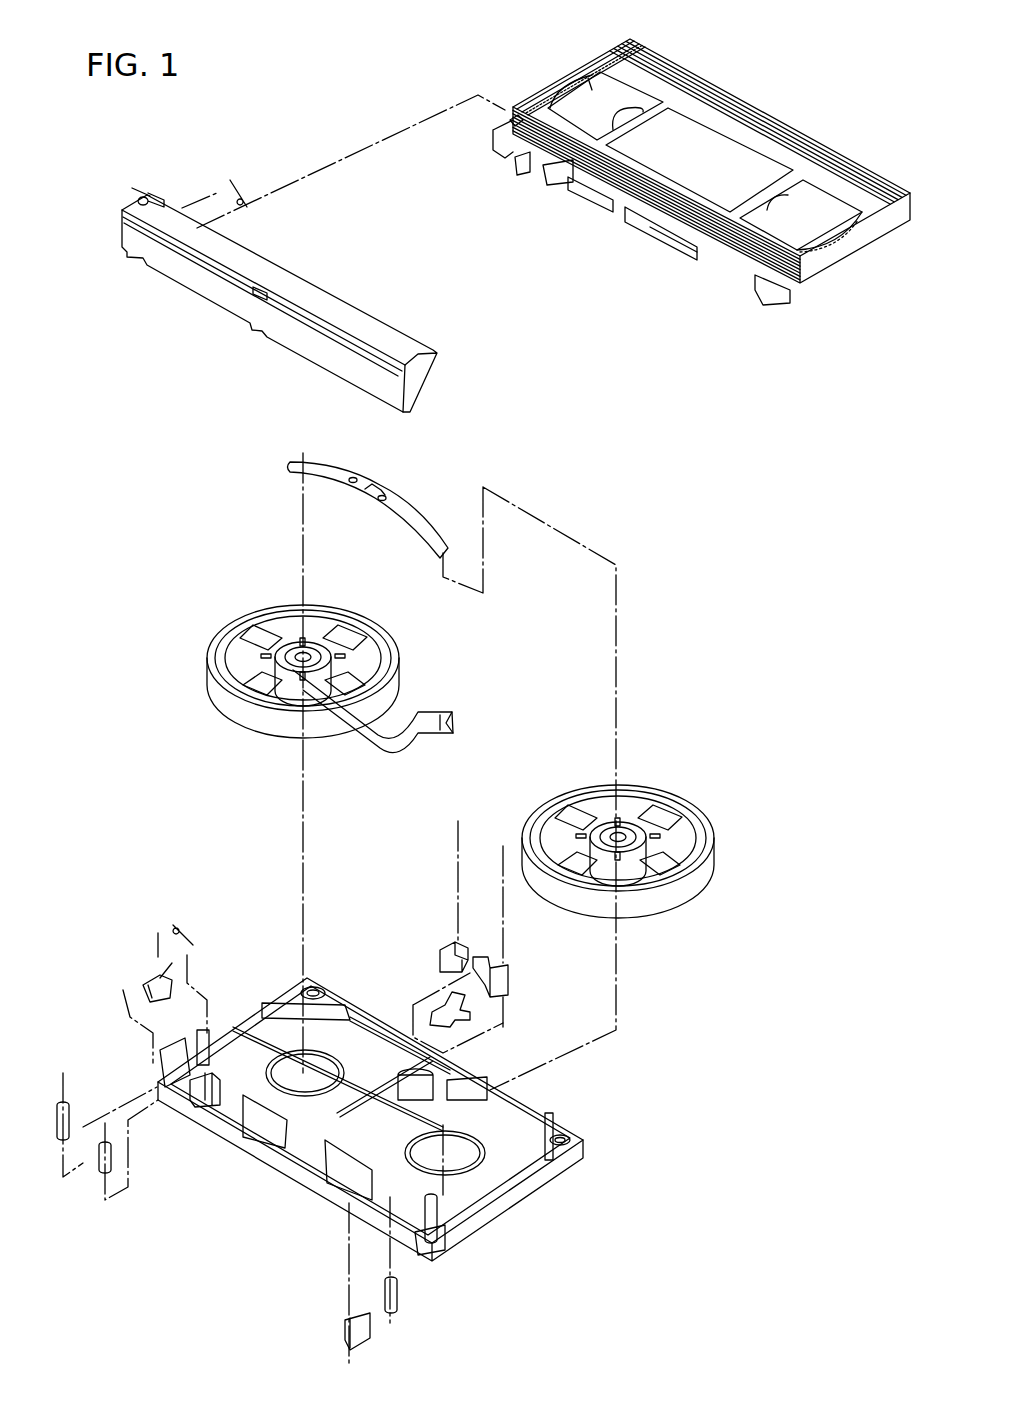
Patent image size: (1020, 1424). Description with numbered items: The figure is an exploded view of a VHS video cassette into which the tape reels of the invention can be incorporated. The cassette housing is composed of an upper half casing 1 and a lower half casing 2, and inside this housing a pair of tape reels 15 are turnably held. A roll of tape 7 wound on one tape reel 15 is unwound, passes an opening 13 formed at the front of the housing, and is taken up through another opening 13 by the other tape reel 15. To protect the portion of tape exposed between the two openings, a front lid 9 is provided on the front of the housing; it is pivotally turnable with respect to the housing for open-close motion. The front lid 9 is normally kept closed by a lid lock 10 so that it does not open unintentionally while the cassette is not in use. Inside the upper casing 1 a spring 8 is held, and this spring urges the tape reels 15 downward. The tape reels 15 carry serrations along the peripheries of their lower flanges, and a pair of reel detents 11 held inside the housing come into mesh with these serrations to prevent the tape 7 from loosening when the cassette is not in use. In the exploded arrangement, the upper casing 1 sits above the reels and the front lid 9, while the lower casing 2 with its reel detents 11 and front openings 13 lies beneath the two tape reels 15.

The upper half casing 1 is at (632, 38).
The lower half casing 2 is at (513, 1170).
The tape 7 is at (427, 727).
The spring 8 is at (403, 510).
The front lid 9 is at (192, 272).
The lid lock 10 is at (157, 972).
The reel detent 11 is at (455, 942).
The opening 13 is at (213, 1110).
The tape reel 15 is at (237, 640).